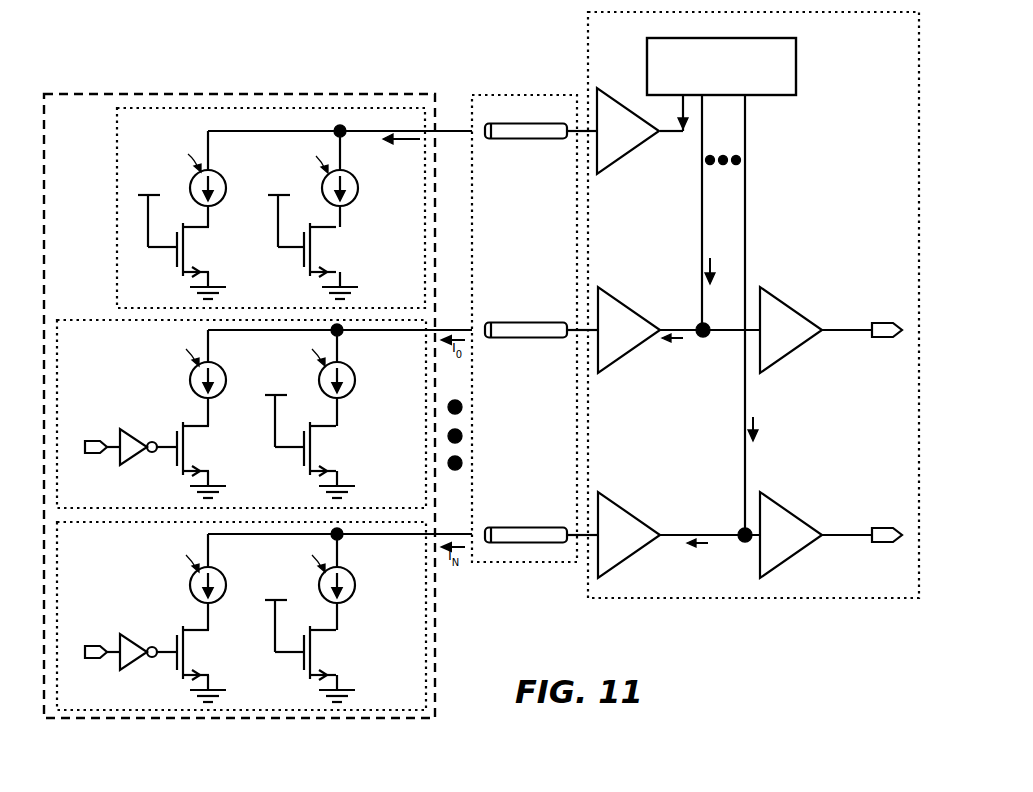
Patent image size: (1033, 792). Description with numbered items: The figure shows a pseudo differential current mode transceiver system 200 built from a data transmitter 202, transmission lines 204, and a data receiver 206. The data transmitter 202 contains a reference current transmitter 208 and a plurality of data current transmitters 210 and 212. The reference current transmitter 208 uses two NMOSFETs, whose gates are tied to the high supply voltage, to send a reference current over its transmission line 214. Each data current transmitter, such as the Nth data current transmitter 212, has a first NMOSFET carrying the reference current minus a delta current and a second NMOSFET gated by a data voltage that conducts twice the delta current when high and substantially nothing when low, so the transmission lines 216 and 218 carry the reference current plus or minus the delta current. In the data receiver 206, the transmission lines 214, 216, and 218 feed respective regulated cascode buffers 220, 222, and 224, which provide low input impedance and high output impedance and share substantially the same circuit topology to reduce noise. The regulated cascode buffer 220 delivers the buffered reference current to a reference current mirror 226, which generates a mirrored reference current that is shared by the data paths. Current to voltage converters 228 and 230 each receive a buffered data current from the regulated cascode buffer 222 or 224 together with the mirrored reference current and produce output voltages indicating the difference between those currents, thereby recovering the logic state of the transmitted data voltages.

The pseudo differential current mode transceiver system 200 is at (216, 66).
The data transmitter 202 is at (319, 92).
The transmission lines 204 is at (521, 91).
The data receiver 206 is at (735, 604).
The reference current transmitter 208 is at (115, 207).
The data current transmitter 210 is at (87, 317).
The Nth data current transmitter 212 is at (53, 621).
The transmission line 214 is at (516, 142).
The transmission line 216 is at (519, 321).
The transmission line 218 is at (519, 526).
The regulated cascode buffer 220 is at (633, 153).
The regulated cascode buffer 222 is at (631, 305).
The regulated cascode buffer 224 is at (631, 511).
The reference current mirror 226 is at (799, 69).
The current to voltage (I-V) converter 228 is at (803, 305).
The Nth current to voltage (I-V) converter 230 is at (803, 511).